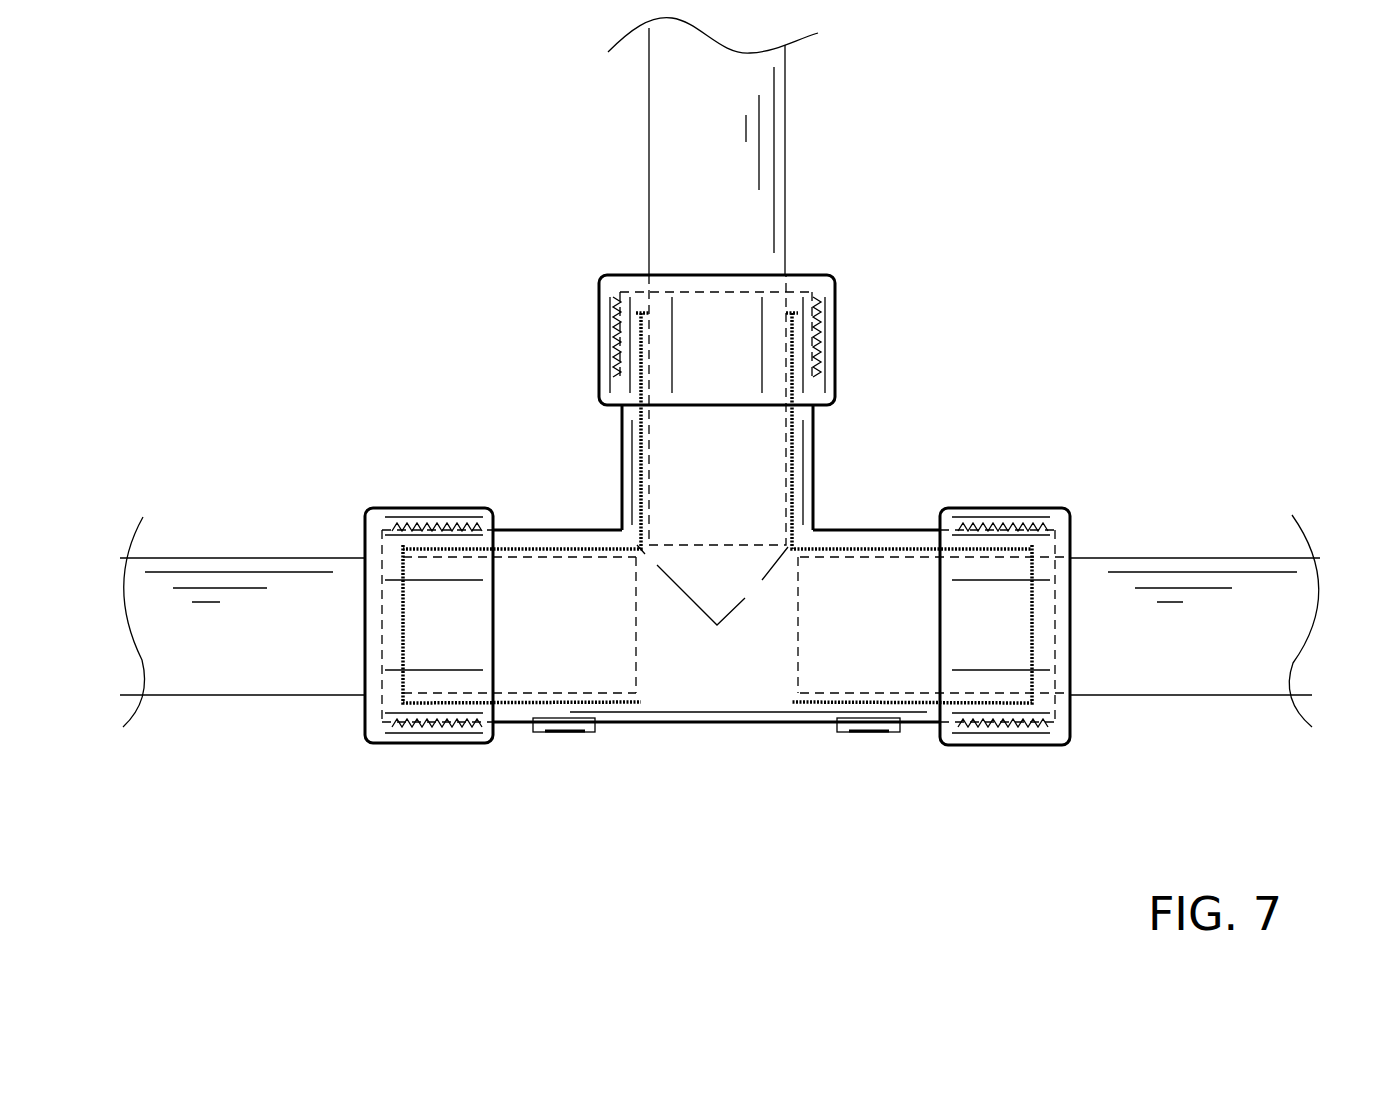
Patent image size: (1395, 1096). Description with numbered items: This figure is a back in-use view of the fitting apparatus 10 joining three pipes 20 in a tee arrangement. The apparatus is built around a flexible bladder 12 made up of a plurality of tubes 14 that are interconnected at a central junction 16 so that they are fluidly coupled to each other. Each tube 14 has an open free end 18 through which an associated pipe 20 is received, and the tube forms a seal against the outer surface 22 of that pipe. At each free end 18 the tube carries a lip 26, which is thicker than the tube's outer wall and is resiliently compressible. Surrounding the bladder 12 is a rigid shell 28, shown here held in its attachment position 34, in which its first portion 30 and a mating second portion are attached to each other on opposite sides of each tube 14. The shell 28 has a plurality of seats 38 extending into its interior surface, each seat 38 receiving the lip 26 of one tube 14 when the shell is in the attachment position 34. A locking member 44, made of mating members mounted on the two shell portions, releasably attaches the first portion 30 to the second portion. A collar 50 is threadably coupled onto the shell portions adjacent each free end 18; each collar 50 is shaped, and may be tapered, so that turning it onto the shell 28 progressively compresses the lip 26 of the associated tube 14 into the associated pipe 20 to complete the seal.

The fitting apparatus 10 is at (1028, 315).
The bladder 12 is at (868, 512).
The tubes 14 is at (698, 458).
The central junction 16 is at (705, 672).
The free end 18 is at (728, 265).
The pipes 20 is at (633, 90).
The outer surface 22 is at (680, 120).
The lip 26 is at (743, 298).
The shell 28 is at (827, 440).
The first portion 30 is at (783, 492).
The attachment position 34 is at (920, 748).
The seats 38 is at (636, 300).
The locking member 44 is at (558, 745).
The collars 50 is at (752, 352).